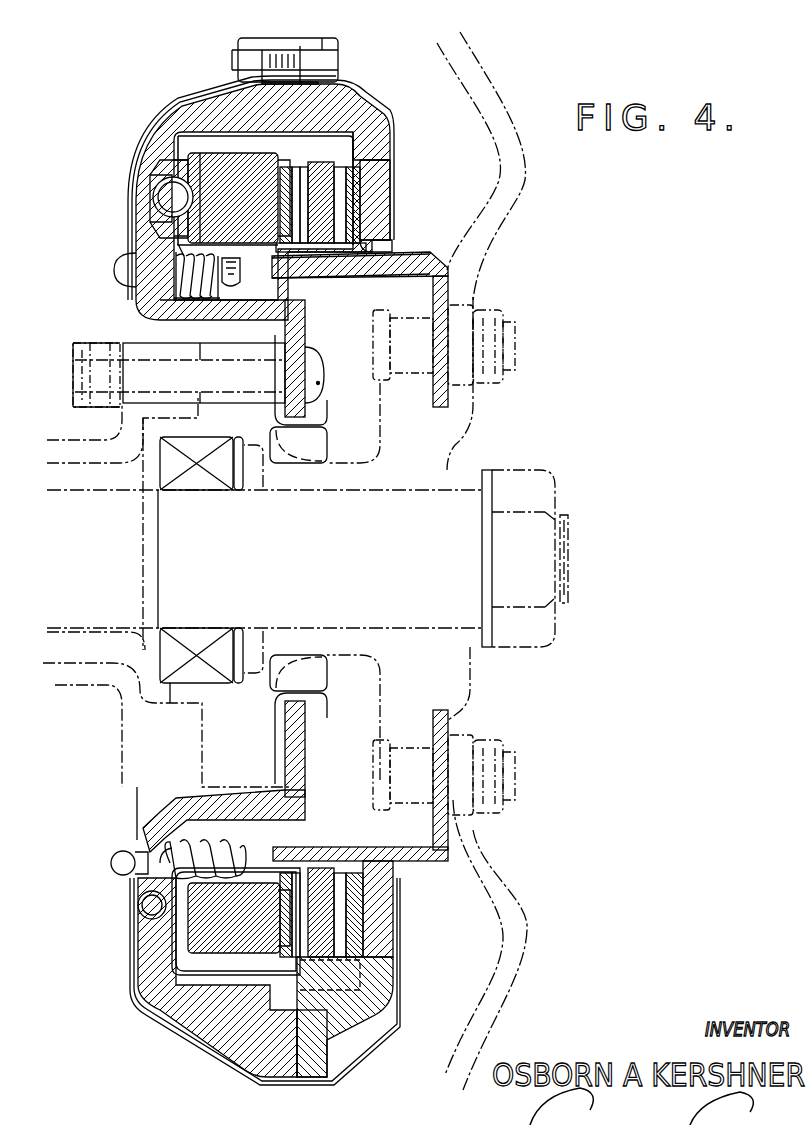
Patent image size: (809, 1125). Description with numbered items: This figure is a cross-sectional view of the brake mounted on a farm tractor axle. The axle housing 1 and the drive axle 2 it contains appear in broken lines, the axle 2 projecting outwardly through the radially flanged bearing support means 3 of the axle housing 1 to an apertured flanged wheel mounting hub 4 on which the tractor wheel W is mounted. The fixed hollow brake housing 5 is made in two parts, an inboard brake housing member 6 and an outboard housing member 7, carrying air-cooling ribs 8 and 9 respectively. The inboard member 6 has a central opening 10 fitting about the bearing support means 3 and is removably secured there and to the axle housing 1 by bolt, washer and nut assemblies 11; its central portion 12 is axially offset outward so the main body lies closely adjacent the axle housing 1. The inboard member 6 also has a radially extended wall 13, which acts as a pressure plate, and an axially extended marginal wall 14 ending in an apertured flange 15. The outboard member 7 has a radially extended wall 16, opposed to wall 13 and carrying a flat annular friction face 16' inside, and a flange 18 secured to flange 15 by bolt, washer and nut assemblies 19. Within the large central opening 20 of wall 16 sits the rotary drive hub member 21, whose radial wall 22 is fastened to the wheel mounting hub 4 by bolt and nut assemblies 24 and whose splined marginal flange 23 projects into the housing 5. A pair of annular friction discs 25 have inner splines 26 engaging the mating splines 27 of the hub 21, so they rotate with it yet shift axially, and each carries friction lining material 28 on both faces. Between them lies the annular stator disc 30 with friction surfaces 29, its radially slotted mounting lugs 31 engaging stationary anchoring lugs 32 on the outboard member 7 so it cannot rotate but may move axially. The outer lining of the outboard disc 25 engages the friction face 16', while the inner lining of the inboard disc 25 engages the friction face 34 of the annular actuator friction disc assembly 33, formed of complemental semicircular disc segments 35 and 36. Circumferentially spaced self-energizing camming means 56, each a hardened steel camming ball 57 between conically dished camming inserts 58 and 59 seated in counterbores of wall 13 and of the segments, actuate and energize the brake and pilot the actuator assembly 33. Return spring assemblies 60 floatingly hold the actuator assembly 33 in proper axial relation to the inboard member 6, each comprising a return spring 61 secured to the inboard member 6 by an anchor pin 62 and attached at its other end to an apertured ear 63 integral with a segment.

The axle housing 1 is at (70, 440).
The drive axle 2 is at (305, 617).
The bearing support means 3 is at (187, 355).
The wheel mounting hub 4 is at (398, 418).
The brake housing 5 is at (175, 86).
The inboard brake housing member 6 is at (156, 122).
The outboard housing member 7 is at (365, 118).
The air-cooling ribs 8 is at (232, 76).
The air-cooling ribs 9 is at (336, 90).
The central opening 10 is at (310, 412).
The bolt, washer and nut assemblies 11 is at (78, 350).
The central portion 12 is at (300, 330).
The radially extended wall 13 is at (150, 242).
The axially extended marginal wall 14 is at (218, 110).
The apertured flange 15 is at (282, 1068).
The radially extended wall 16 is at (398, 200).
The friction face 16' is at (399, 156).
The apertured flange 18 is at (312, 1068).
The bolt, washer and nut assemblies 19 is at (245, 42).
The central opening 20 is at (392, 247).
The drive hub member 21 is at (445, 272).
The radially disposed wall 22 is at (450, 300).
The marginal splined flange 23 is at (322, 276).
The bolt and nut assemblies 24 is at (510, 374).
The friction discs 25 is at (292, 168).
The splines 26 is at (302, 252).
The mating splines 27 is at (380, 860).
The friction lining material 28 is at (345, 212).
The friction surfaces 29 is at (326, 180).
The stator disc 30 is at (330, 205).
The mounting lugs 31 is at (385, 965).
The anchoring lugs 32 is at (300, 970).
The actuator friction disc assembly 33 is at (248, 170).
The friction face 34 is at (280, 168).
The disc segment 35 is at (190, 184).
The disc segment 36 is at (186, 917).
The camming means 56 is at (158, 188).
The camming ball 57 is at (180, 902).
The camming insert 58 is at (176, 176).
The camming insert 59 is at (176, 150).
The return spring assemblies 60 is at (184, 302).
The return spring 61 is at (190, 302).
The anchor pin 62 is at (124, 270).
The apertured ear 63 is at (240, 276).
The tractor wheel W is at (528, 190).